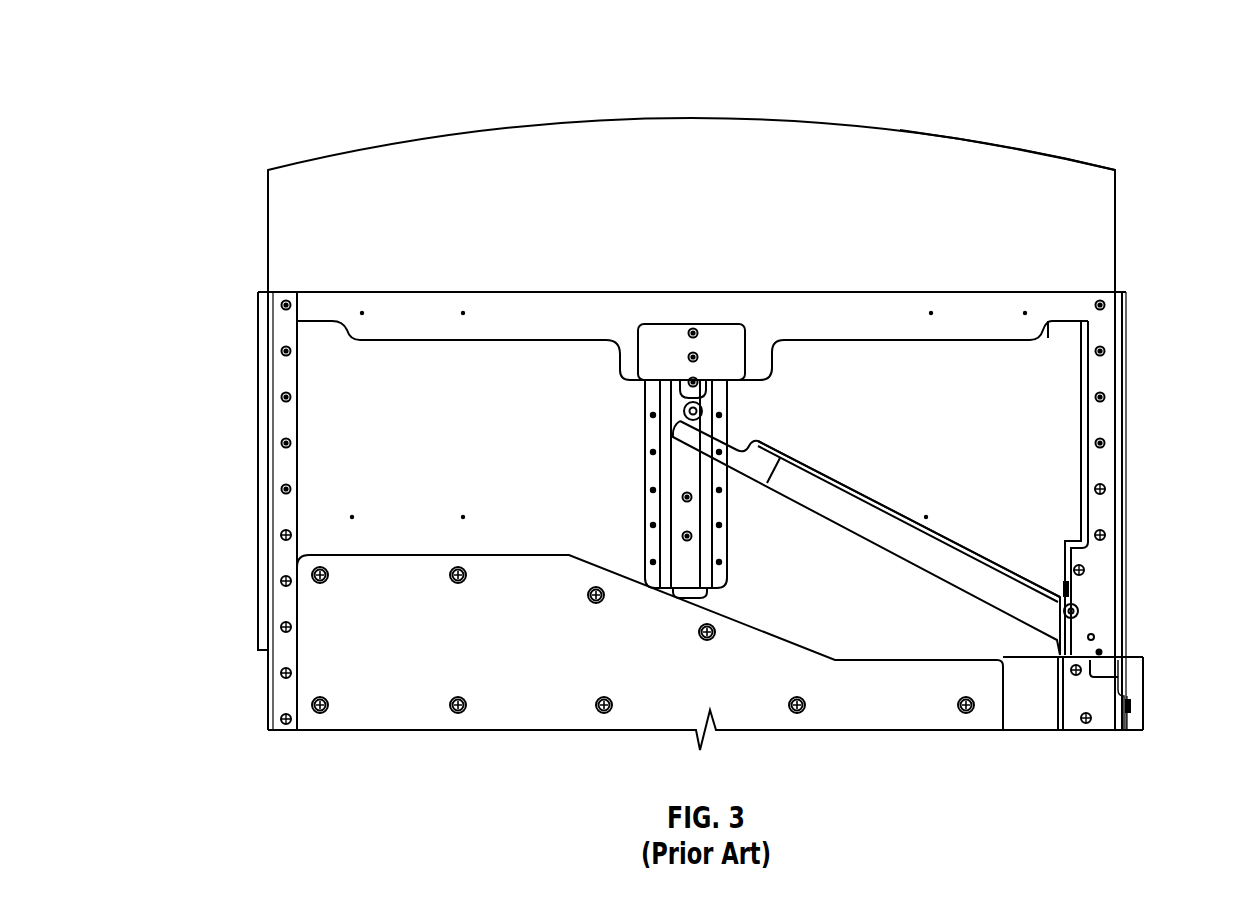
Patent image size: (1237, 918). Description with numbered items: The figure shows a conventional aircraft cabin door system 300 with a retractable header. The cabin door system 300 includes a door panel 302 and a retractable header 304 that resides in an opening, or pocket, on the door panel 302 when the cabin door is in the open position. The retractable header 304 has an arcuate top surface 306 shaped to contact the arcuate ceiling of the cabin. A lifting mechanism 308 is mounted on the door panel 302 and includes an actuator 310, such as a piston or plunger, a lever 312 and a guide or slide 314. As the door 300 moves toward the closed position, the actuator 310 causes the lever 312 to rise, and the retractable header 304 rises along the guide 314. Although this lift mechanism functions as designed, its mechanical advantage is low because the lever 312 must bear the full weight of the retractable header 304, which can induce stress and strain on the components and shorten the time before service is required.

The cabin door system 300 is at (281, 113).
The door panel 302 is at (263, 373).
The retractable header 304 is at (710, 137).
The arcuate top surface 306 is at (1009, 147).
The lifting mechanism 308 is at (794, 512).
The actuator 310 is at (1130, 650).
The lever 312 is at (913, 518).
The guide 314 is at (669, 480).